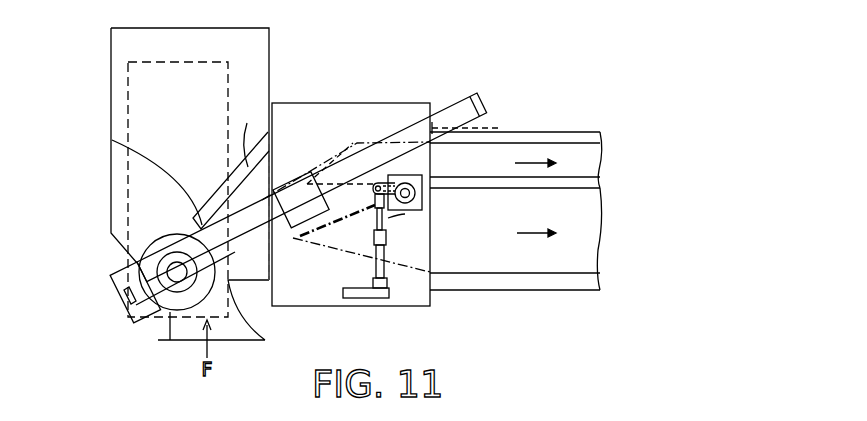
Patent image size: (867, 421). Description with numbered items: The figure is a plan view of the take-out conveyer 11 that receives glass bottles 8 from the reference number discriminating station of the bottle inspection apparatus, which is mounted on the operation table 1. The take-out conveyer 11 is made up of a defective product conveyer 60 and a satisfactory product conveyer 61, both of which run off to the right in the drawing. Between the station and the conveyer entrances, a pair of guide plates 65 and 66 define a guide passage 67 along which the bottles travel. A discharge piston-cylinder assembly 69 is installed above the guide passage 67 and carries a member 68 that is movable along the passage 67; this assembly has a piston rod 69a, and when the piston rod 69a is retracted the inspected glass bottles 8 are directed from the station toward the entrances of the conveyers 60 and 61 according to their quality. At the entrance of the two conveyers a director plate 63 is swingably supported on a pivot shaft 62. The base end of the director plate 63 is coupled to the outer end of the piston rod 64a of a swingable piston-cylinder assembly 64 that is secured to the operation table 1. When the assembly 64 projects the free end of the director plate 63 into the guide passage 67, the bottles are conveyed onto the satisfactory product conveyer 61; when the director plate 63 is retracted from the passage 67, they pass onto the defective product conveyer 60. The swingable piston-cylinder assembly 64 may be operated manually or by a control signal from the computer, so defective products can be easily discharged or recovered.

The operation table 1 is at (415, 297).
The glass bottle 8 is at (175, 258).
The take-out conveyer 11 is at (532, 130).
The defective product conveyer 60 is at (590, 166).
The satisfactory product conveyer 61 is at (583, 240).
The pivot shaft 62 is at (422, 195).
The director plate 63 is at (342, 182).
The swingable piston-cylinder assembly 64 is at (375, 265).
The piston rod 64a is at (388, 218).
The guide plate 65 is at (247, 133).
The guide plate 66 is at (272, 262).
The guide passage 67 is at (275, 177).
The movable member 68 is at (108, 288).
The discharge piston-cylinder assembly 69 is at (410, 138).
The piston rod 69a is at (225, 200).